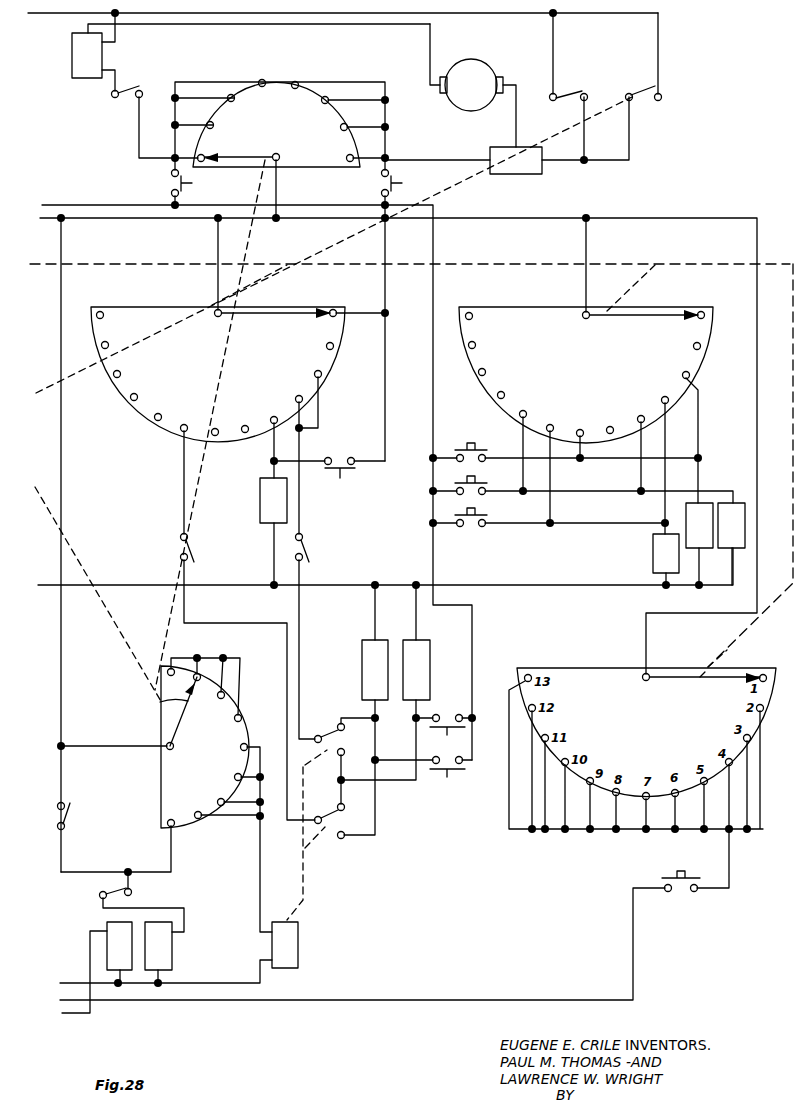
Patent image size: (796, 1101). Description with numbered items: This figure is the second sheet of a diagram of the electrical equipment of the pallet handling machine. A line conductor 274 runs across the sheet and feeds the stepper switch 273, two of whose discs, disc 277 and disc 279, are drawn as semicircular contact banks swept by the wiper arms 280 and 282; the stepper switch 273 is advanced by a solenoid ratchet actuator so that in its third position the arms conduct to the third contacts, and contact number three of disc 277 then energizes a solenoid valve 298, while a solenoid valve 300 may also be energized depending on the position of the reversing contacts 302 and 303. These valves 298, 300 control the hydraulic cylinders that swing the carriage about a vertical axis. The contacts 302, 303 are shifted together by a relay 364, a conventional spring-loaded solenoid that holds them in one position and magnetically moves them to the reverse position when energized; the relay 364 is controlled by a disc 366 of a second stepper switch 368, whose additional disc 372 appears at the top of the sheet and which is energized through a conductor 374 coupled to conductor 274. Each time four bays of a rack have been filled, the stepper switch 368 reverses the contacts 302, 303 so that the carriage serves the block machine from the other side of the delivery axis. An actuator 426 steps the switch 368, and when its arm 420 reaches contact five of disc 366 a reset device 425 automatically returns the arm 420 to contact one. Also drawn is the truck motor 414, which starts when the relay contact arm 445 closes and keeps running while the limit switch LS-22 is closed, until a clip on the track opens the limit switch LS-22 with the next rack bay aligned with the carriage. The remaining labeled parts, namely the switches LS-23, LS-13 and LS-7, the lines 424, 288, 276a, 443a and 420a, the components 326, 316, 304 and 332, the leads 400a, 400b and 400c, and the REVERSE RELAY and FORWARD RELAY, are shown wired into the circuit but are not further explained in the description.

The disc 372 is at (270, 80).
The stepper switch 368 is at (282, 92).
The motor 414 is at (470, 60).
The limit switch LS-22 is at (572, 94).
The relay contact arm 445 is at (648, 90).
The limit switch LS-23 is at (128, 100).
The stepper switch 273 is at (106, 206).
The conductor 424 is at (280, 192).
The line conductor 274 is at (162, 226).
The mechanical linkage 276a is at (664, 268).
The disc 277 is at (192, 312).
The wiper arm 280 is at (280, 312).
The disc 279 is at (556, 296).
The wiper arm 282 is at (640, 312).
The linkage 443a is at (80, 364).
The resistor 326 is at (260, 500).
The limit switch LS-13 is at (196, 550).
The limit switch LS-7 is at (306, 552).
The linkage 420a is at (80, 556).
The conductor line 288 is at (150, 568).
The resistor 316 is at (654, 556).
The resistor 304 is at (700, 540).
The resistor 332 is at (744, 518).
The solenoid valve 298 is at (362, 640).
The solenoid valve 300 is at (408, 640).
The reversing switch contact 302 is at (334, 746).
The reversing switch contact 303 is at (340, 815).
The conductor 374 is at (76, 668).
The arm 420 is at (160, 702).
The disc 366 is at (172, 782).
The actuator 426 is at (104, 922).
The reset device 425 is at (168, 946).
The terminal 400a is at (84, 938).
The terminal 400b is at (60, 1002).
The terminal 400c is at (62, 1012).
The relay 364 is at (292, 950).
The reverse relay REVERSE RELAY is at (100, 60).
The forward relay FORWARD RELAY is at (543, 172).